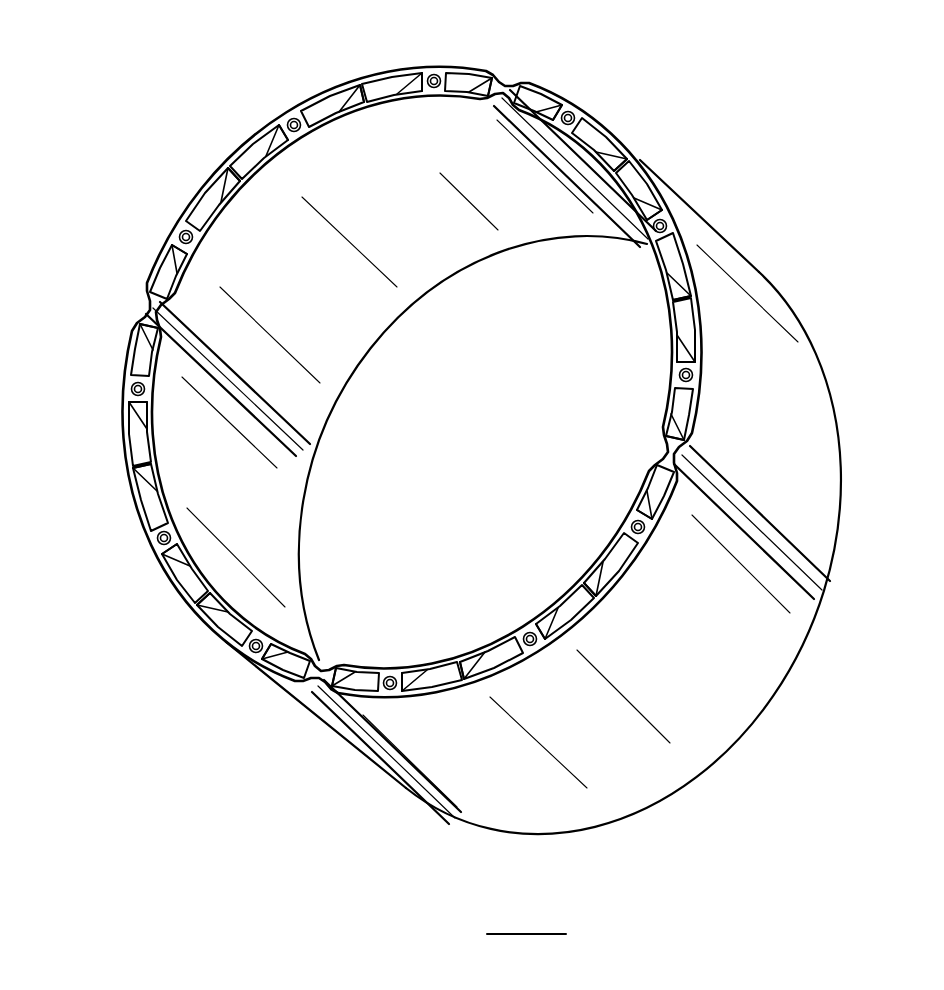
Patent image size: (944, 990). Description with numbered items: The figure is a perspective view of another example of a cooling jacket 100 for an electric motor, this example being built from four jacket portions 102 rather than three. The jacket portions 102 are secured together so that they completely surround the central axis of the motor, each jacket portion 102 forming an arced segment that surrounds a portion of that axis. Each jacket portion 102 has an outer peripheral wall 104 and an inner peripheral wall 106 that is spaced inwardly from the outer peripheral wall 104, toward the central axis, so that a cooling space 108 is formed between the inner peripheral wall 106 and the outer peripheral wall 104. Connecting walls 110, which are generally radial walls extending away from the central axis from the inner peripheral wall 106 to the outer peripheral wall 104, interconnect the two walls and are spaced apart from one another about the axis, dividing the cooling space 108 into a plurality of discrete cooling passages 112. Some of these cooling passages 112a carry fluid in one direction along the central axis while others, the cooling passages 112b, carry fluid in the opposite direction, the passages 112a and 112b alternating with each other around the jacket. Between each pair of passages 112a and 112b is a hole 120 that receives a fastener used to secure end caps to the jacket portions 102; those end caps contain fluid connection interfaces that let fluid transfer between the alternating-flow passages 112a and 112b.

The cooling jacket 100 is at (665, 95).
The jacket portion 102 is at (291, 118).
The outer peripheral wall 104 is at (396, 76).
The inner peripheral wall 106 is at (404, 104).
The cooling space 108 is at (400, 84).
The connecting wall 110 is at (240, 200).
The cooling passage 112 is at (222, 207).
The cooling passage flowing in one direction 112a is at (337, 104).
The cooling passage flowing in opposite direction 112b is at (270, 142).
The hole 120 is at (183, 231).